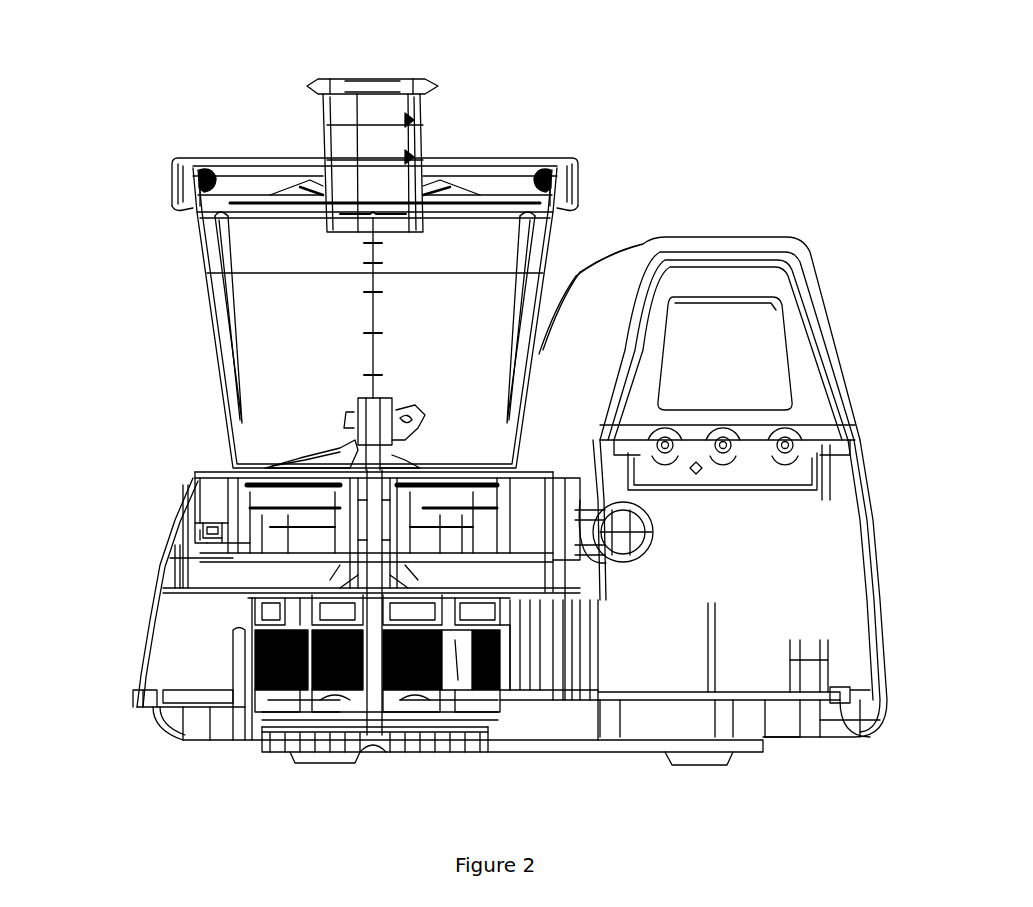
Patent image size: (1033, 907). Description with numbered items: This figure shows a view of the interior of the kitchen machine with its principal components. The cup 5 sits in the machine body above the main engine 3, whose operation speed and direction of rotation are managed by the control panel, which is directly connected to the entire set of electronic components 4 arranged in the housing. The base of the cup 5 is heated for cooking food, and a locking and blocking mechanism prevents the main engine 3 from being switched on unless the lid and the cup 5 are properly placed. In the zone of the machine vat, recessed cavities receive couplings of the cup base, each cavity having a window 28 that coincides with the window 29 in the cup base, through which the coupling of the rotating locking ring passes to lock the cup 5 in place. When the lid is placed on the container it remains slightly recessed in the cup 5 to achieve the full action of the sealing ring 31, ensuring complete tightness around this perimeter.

The sealing ring 31 is at (210, 194).
The cup 5 is at (260, 402).
The window 28 is at (203, 527).
The window 29 is at (216, 520).
The set of electronic components 4 is at (747, 463).
The main engine 3 is at (253, 673).